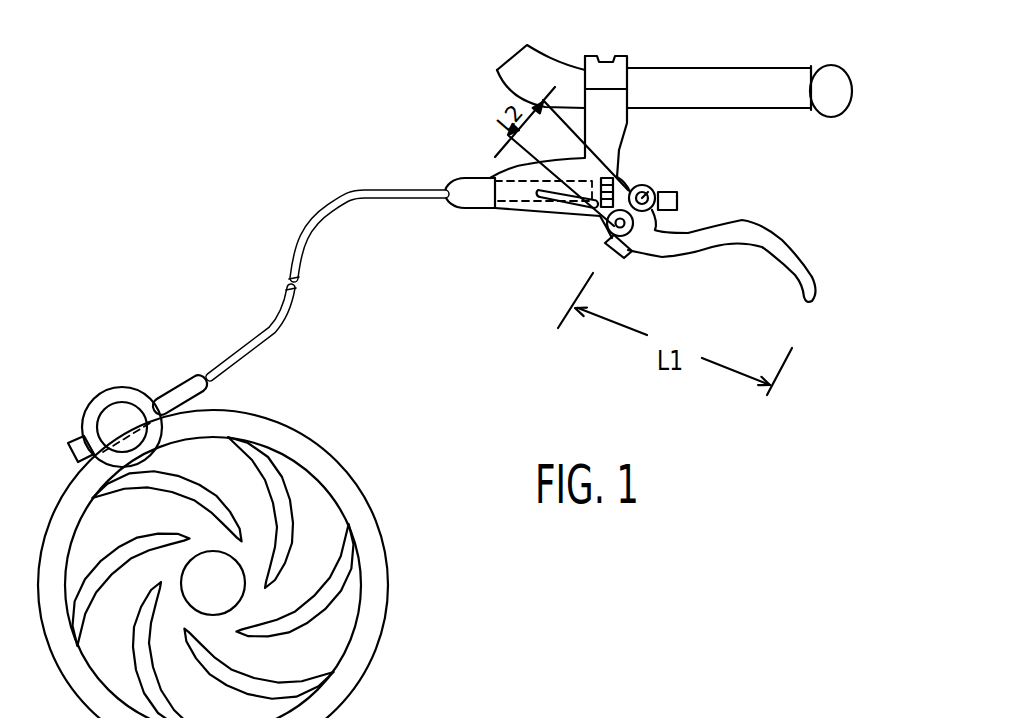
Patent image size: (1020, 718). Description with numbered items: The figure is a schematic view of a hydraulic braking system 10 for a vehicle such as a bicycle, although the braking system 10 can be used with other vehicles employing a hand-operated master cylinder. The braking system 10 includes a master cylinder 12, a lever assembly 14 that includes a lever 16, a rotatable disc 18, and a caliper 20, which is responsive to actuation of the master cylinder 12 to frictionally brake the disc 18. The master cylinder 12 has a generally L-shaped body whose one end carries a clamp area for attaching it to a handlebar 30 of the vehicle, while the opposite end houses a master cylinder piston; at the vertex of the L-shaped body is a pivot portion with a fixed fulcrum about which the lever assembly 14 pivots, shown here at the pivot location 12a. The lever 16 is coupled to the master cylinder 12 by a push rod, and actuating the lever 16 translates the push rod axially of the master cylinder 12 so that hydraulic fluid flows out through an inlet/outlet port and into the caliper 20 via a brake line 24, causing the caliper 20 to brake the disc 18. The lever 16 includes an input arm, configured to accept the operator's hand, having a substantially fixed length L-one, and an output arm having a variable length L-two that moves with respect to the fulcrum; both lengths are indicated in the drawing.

The braking system 10 is at (180, 88).
The master cylinder 12 is at (517, 222).
The lever pivot 12a is at (608, 230).
The lever assembly 14 is at (674, 262).
The lever 16 is at (723, 218).
The rotatable disc 18 is at (337, 480).
The caliper 20 is at (113, 393).
The brake line 24 is at (415, 188).
The handlebar 30 is at (722, 80).